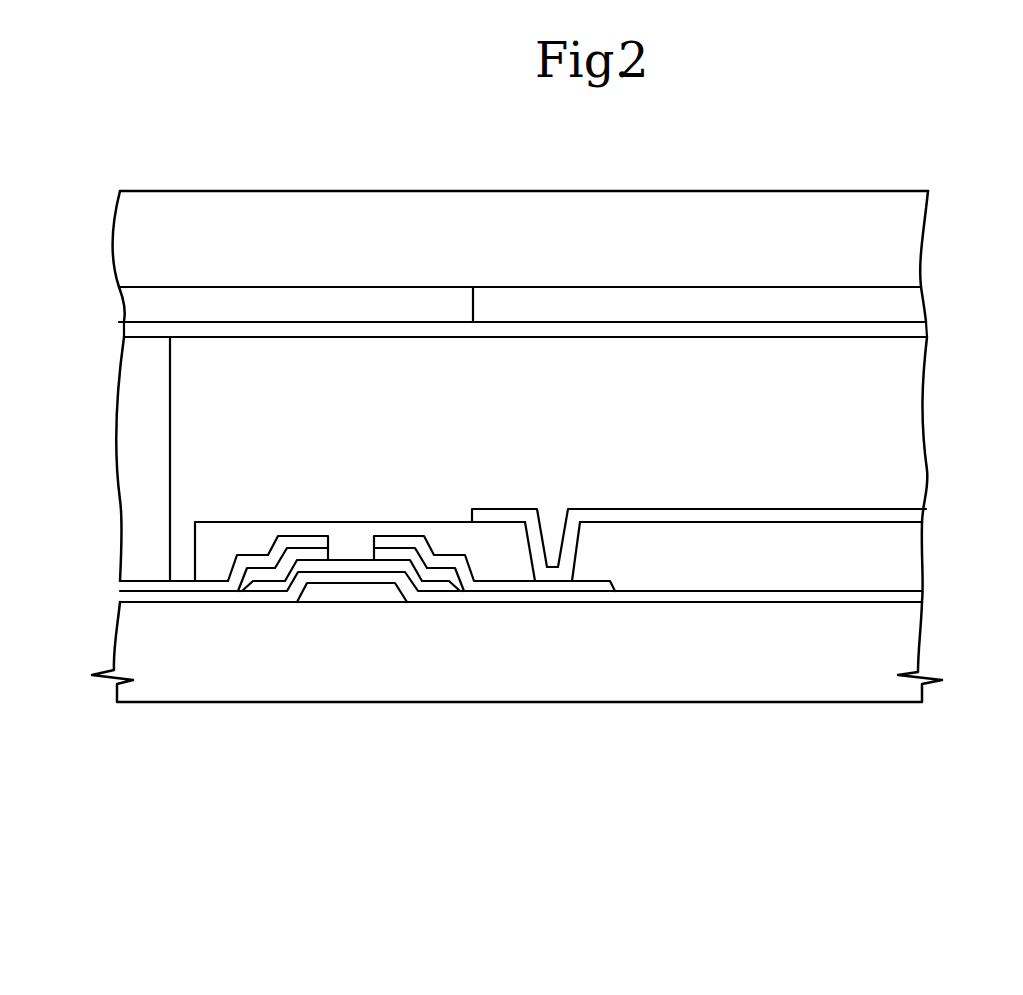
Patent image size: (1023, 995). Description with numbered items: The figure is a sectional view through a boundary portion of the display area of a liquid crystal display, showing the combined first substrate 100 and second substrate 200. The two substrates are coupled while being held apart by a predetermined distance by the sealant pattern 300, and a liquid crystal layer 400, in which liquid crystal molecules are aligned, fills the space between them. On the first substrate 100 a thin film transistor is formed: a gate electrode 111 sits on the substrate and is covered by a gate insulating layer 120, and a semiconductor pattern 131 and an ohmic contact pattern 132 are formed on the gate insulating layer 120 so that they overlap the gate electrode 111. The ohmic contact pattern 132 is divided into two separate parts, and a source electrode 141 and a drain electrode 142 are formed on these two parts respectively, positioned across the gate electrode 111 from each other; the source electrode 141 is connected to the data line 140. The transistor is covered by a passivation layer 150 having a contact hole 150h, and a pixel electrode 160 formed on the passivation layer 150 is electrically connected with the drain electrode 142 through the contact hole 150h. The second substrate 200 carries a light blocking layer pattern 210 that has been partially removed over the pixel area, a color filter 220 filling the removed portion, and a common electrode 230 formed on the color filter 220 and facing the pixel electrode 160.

The first substrate 100 is at (912, 640).
The gate electrode 111 is at (357, 597).
The gate insulating layer 120 is at (912, 596).
The semiconductor pattern 131 is at (277, 585).
The ohmic contact pattern 132 is at (255, 575).
The data line 140 is at (133, 583).
The source electrode 141 is at (208, 585).
The drain electrode 142 is at (513, 583).
The passivation layer 150 is at (348, 528).
The contact hole 150h is at (530, 550).
The pixel electrode 160 is at (912, 515).
The second substrate 200 is at (912, 238).
The light blocking layer pattern 210 is at (312, 313).
The color filter 220 is at (690, 313).
The common electrode 230 is at (912, 328).
The sealant pattern 300 is at (160, 416).
The liquid crystal layer 400 is at (912, 426).